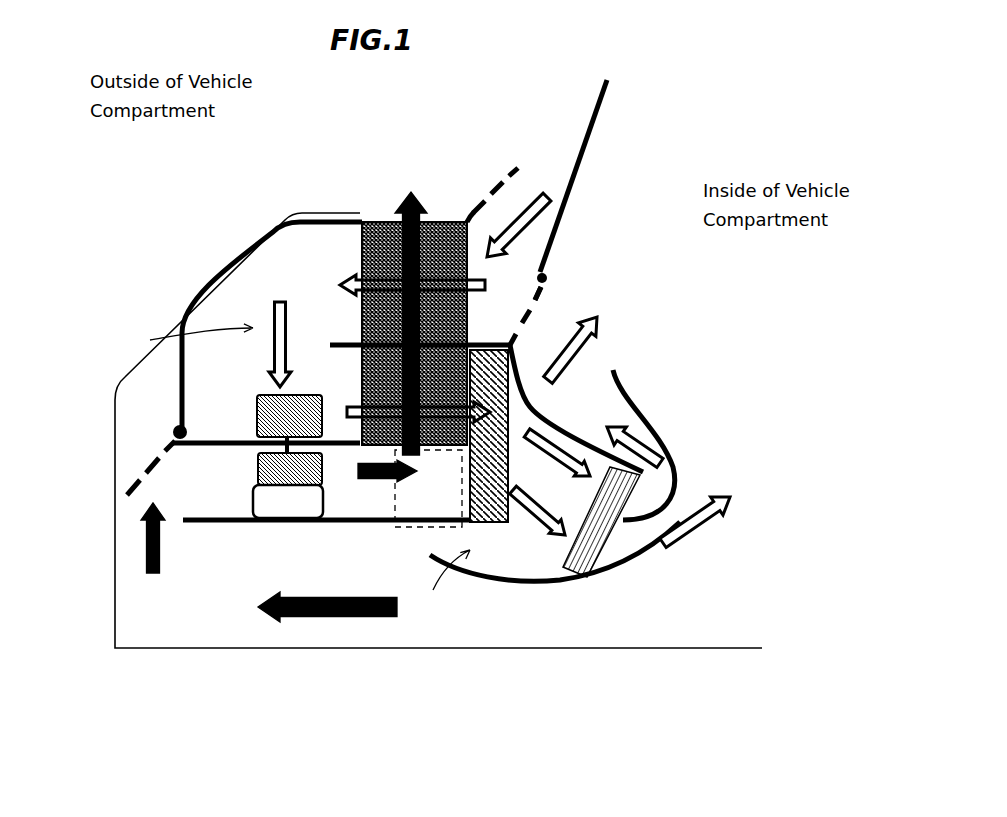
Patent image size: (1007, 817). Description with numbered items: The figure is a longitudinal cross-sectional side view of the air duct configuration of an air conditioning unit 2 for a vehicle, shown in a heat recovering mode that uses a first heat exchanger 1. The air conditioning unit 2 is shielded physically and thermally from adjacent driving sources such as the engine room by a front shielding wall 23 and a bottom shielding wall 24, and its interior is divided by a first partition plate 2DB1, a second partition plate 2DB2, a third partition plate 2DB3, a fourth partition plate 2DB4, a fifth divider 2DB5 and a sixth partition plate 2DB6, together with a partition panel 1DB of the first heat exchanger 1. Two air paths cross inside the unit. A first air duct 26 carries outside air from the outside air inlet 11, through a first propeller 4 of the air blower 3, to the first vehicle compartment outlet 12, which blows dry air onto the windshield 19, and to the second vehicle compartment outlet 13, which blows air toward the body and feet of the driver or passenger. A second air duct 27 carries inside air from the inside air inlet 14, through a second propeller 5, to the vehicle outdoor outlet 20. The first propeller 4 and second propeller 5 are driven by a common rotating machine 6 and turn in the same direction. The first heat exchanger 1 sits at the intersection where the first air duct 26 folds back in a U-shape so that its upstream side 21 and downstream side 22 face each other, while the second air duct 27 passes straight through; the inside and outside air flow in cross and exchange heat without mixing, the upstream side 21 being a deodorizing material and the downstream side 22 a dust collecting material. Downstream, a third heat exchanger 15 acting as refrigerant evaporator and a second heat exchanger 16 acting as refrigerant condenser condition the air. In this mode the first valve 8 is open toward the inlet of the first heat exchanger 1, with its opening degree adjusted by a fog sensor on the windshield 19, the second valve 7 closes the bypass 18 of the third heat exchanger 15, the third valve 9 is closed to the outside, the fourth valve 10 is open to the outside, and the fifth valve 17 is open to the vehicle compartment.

The first heat exchanger 1 is at (345, 262).
The partition panel of the first heat exchanger 1DB is at (335, 343).
The air conditioning unit 2 is at (260, 235).
The first partition plate 2DB1 is at (133, 267).
The second partition plate 2DB2 is at (387, 520).
The third partition plate 2DB3 is at (520, 578).
The fourth partition plate 2DB4 is at (598, 316).
The fifth divider 2DB5 is at (643, 413).
The sixth partition plate 2DB6 is at (522, 540).
The air blower 3 is at (220, 516).
The first propeller 4 is at (250, 393).
The second propeller 5 is at (253, 470).
The rotating machine 6 is at (360, 521).
The second valve 7 is at (440, 560).
The first valve 8 is at (480, 580).
The third valve 9 is at (543, 300).
The fourth valve 10 is at (493, 190).
The outside air inlet 11 is at (553, 240).
The first vehicle compartment outlet 12 is at (609, 345).
The second vehicle compartment outlet 13 is at (709, 479).
The inside air inlet 14 is at (684, 625).
The third heat exchanger 15 is at (592, 433).
The second heat exchanger 16 is at (627, 490).
The fifth valve 17 is at (167, 440).
The bypass 18 is at (490, 580).
The windshield 19 is at (567, 163).
The vehicle outdoor outlet 20 is at (397, 183).
The upstream side of the first heat exchanger 21 is at (348, 256).
The downstream side of the first heat exchanger 22 is at (427, 530).
The front shielding wall 23 is at (150, 340).
The bottom shielding wall 24 is at (197, 648).
The first air duct 26 is at (250, 330).
The second air duct 27 is at (213, 632).